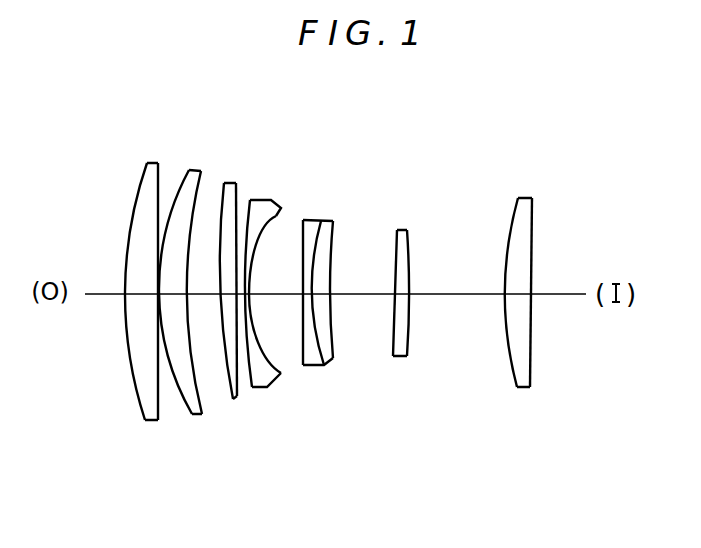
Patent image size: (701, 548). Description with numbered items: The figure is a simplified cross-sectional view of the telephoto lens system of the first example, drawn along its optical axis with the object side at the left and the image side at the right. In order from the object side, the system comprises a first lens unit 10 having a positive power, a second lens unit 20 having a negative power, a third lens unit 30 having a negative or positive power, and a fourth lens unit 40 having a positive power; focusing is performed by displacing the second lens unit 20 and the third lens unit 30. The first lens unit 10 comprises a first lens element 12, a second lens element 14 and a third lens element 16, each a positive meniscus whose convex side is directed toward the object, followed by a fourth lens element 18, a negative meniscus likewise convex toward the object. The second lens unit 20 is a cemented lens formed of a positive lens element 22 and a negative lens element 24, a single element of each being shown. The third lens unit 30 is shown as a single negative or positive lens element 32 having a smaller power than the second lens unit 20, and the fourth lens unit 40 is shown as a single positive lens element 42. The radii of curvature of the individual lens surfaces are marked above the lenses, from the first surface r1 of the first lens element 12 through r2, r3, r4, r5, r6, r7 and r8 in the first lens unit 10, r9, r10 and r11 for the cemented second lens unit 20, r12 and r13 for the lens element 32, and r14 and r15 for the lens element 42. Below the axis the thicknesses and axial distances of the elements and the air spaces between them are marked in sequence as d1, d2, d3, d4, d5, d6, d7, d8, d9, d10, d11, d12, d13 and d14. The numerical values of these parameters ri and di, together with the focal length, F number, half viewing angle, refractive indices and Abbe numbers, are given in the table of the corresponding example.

The first lens unit 10 is at (117, 119).
The second lens unit 20 is at (423, 119).
The third lens unit 30 is at (487, 119).
The fourth lens unit 40 is at (490, 119).
The first lens element 12 is at (137, 200).
The second lens element 14 is at (185, 190).
The third lens element 16 is at (222, 292).
The fourth lens element 18 is at (255, 246).
The positive lens element 22 is at (331, 270).
The negative lens element 24 is at (301, 268).
The negative or positive lens element 32 is at (411, 272).
The positive lens element 42 is at (534, 237).
The radius of curvature of first lens surface r1 is at (147, 164).
The radius of curvature of second lens surface r2 is at (161, 167).
The radius of curvature of third lens surface r3 is at (189, 170).
The radius of curvature of fourth lens surface r4 is at (202, 172).
The radius of curvature of fifth lens surface r5 is at (230, 182).
The radius of curvature of sixth lens surface r6 is at (238, 186).
The radius of curvature of seventh lens surface r7 is at (250, 200).
The radius of curvature of eighth lens surface r8 is at (281, 208).
The radius of curvature of ninth lens surface r9 is at (303, 220).
The radius of curvature of tenth lens surface r10 is at (322, 221).
The radius of curvature of eleventh lens surface r11 is at (334, 228).
The radius of curvature of twelfth lens surface r12 is at (397, 230).
The radius of curvature of thirteenth lens surface r13 is at (408, 230).
The radius of curvature of fourteenth lens surface r14 is at (518, 198).
The radius of curvature of fifteenth lens surface r15 is at (533, 206).
The first thickness or axial distance d1 is at (139, 294).
The second thickness or axial distance d2 is at (149, 294).
The third thickness or axial distance d3 is at (175, 294).
The fourth thickness or axial distance d4 is at (213, 294).
The fifth thickness or axial distance d5 is at (227, 294).
The sixth thickness or axial distance d6 is at (243, 294).
The seventh thickness or axial distance d7 is at (252, 294).
The eighth thickness or axial distance d8 is at (280, 294).
The ninth thickness or axial distance d9 is at (308, 294).
The tenth thickness or axial distance d10 is at (321, 294).
The eleventh thickness or axial distance d11 is at (363, 294).
The twelfth thickness or axial distance d12 is at (402, 294).
The thirteenth thickness or axial distance d13 is at (457, 294).
The fourteenth thickness or axial distance d14 is at (519, 294).